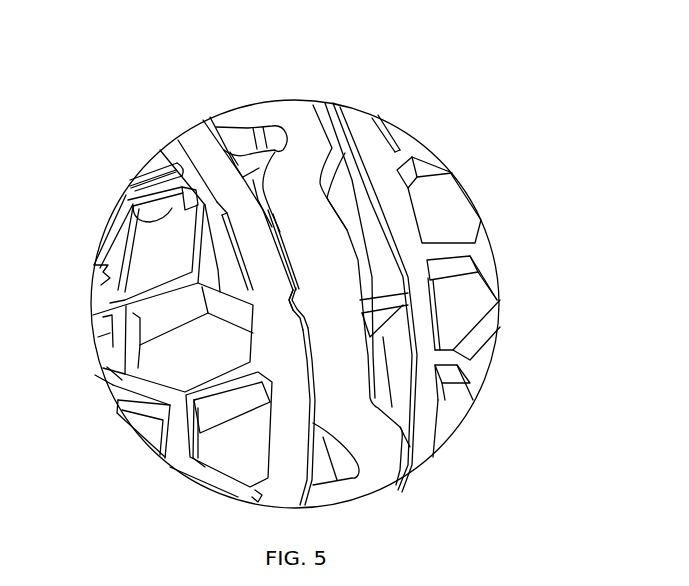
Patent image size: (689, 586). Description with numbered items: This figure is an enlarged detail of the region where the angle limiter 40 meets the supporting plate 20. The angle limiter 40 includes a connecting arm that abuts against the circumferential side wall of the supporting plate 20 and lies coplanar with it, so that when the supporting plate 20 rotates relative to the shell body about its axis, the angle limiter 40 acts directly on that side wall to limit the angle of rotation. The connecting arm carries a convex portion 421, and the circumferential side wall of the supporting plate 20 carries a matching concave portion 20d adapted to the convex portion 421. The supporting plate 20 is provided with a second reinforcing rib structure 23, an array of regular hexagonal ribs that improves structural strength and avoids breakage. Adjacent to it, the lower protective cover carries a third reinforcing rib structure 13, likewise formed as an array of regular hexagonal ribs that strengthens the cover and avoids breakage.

The supporting plate 20 is at (192, 140).
The angle limiter 40 is at (295, 105).
The convex portion 421 is at (290, 303).
The third reinforcing rib structure 13 is at (458, 265).
The second reinforcing rib structure 23 is at (123, 353).
The concave portion 20d is at (290, 303).